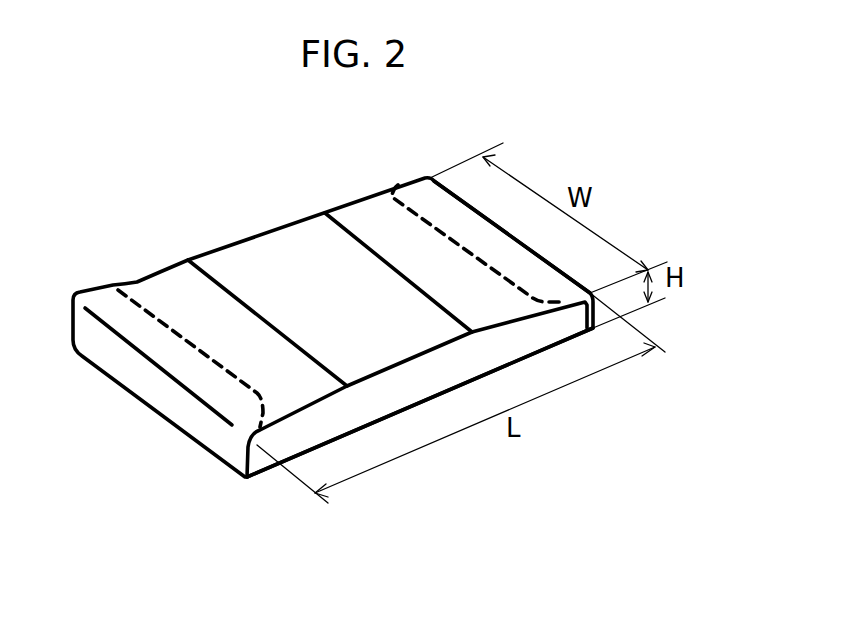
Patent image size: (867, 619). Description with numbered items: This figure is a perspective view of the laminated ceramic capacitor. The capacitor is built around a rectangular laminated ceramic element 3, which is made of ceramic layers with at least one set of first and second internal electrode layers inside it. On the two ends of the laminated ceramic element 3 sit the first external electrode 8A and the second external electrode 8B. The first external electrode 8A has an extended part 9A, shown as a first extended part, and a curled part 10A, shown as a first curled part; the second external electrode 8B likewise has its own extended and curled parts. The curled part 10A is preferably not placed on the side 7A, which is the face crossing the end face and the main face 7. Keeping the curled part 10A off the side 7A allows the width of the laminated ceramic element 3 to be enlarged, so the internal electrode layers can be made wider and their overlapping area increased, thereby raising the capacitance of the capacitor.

The laminated ceramic element 3 is at (248, 242).
The main face 7 is at (398, 353).
The side 7A is at (387, 405).
The external electrode 8A is at (348, 200).
The external electrode 8B is at (142, 278).
The extended part 9A is at (383, 213).
The curled part 10A is at (453, 220).